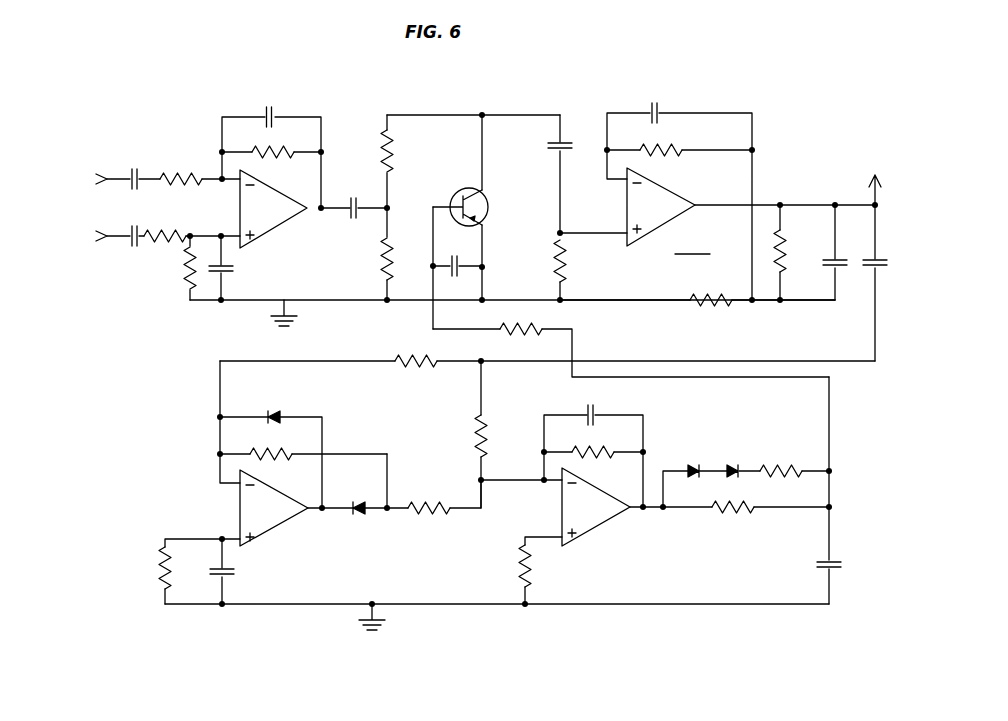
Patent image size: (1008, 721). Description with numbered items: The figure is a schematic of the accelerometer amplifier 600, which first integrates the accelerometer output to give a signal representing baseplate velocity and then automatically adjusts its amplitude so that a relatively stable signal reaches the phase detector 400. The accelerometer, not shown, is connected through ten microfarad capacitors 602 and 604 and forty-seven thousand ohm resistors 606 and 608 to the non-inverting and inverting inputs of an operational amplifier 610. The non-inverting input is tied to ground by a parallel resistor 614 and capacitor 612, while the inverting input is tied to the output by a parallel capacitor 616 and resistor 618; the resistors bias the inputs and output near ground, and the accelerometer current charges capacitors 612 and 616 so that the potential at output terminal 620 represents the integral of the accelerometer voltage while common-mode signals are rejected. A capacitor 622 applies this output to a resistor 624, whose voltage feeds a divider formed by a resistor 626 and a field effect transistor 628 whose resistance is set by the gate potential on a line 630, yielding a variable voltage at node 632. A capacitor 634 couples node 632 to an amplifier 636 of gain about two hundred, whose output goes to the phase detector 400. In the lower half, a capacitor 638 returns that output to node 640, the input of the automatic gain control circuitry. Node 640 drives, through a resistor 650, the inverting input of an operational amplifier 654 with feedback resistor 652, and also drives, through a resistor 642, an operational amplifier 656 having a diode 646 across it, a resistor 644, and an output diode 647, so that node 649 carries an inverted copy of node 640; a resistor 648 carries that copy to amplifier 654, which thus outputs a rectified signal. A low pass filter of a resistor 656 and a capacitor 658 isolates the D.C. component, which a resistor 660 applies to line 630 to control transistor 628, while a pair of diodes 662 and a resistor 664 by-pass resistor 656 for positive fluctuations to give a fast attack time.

The phase detector 400 is at (846, 151).
The accelerometer amplifier 600 is at (113, 443).
The capacitor 602 is at (133, 246).
The capacitor 604 is at (133, 168).
The resistor 606 is at (178, 170).
The resistor 608 is at (163, 246).
The operational amplifier 610 is at (282, 209).
The capacitor 612 is at (233, 275).
The resistor 614 is at (188, 285).
The capacitor 616 is at (277, 108).
The resistor 618 is at (269, 160).
The output terminal 620 is at (321, 221).
The capacitor 622 is at (361, 213).
The resistor 624 is at (382, 265).
The resistor 626 is at (396, 141).
The field effect transistor 628 is at (489, 198).
The line 630 is at (433, 318).
The node 632 is at (482, 113).
The capacitor 634 is at (554, 150).
The amplifier 636 is at (719, 204).
The capacitor 638 is at (872, 272).
The node 640 is at (480, 366).
The resistor 642 is at (402, 366).
The resistor 644 is at (263, 458).
The diode 646 is at (280, 391).
The diode 647 is at (358, 516).
The resistor 648 is at (425, 515).
The node 649 is at (387, 473).
The resistor 650 is at (477, 440).
The resistor 652 is at (585, 456).
The operational amplifier 654 is at (607, 520).
The operational amplifier 656 is at (280, 530).
The capacitor 658 is at (814, 568).
The resistor 660 is at (540, 331).
The pair of diodes 662 is at (690, 465).
The resistor 664 is at (781, 466).